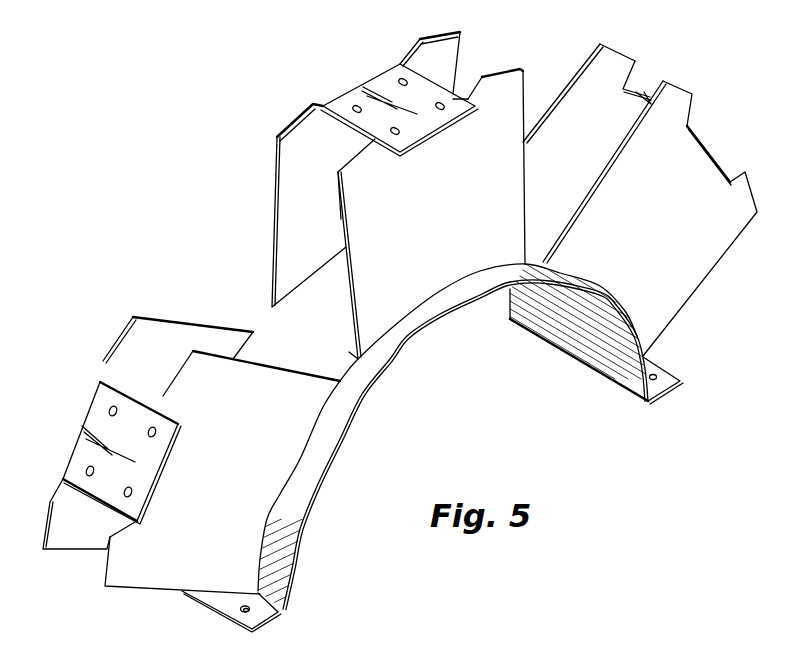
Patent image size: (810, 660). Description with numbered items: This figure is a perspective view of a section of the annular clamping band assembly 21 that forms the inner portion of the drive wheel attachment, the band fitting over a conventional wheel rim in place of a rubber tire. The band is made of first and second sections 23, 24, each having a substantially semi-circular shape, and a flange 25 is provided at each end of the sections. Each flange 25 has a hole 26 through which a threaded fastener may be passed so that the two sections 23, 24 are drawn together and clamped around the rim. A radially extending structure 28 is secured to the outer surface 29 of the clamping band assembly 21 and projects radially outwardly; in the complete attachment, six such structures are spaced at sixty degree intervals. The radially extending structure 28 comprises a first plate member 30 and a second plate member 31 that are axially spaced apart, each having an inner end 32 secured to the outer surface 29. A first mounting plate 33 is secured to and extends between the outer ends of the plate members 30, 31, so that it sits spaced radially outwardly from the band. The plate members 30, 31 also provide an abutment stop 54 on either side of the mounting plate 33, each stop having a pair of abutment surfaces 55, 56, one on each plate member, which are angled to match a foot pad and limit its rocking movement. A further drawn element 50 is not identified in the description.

The clamping band assembly 21 is at (449, 439).
The first section 23 is at (257, 307).
The second section 24 is at (257, 307).
The flange 25 is at (668, 390).
The hole 26 is at (665, 375).
The radially extending structure 28 is at (450, 260).
The outer surface 29 is at (393, 347).
The first plate member 30 is at (367, 298).
The second plate member 31 is at (290, 220).
The inner end 32 is at (412, 307).
The first mounting plate 33 is at (383, 77).
The side bracket panel 50 is at (640, 200).
The abutment stop 54 is at (340, 163).
The abutment surface 55 is at (280, 133).
The abutment surface 56 is at (340, 163).